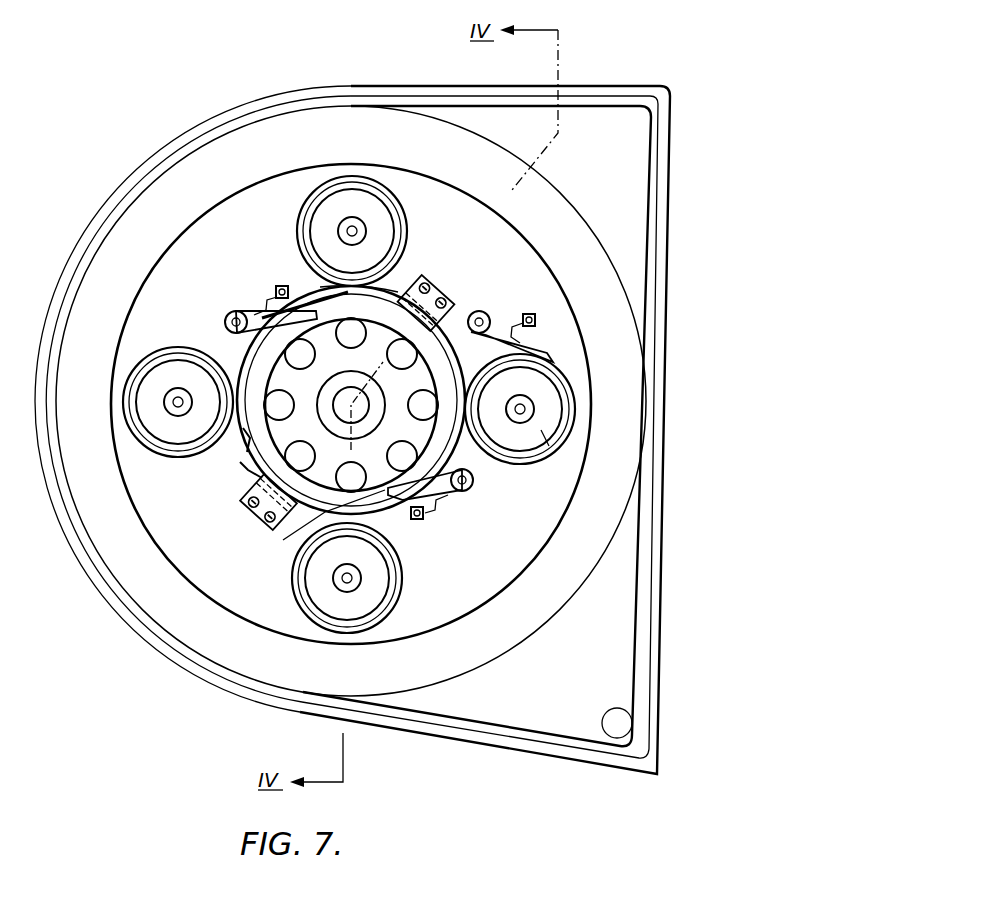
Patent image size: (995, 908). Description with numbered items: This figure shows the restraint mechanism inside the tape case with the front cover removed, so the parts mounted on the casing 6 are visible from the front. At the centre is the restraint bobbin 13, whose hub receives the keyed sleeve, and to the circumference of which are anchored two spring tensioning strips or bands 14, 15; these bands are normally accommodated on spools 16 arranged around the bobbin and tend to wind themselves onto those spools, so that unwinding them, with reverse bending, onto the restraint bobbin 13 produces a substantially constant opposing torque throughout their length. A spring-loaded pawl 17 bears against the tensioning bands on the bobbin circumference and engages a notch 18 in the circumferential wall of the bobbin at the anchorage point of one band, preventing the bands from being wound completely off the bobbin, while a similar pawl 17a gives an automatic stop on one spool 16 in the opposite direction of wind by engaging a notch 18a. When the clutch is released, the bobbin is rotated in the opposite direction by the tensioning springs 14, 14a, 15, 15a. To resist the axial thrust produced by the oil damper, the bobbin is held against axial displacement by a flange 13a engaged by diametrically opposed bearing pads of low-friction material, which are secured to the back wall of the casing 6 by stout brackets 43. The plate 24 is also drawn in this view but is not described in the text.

The casing 6 is at (149, 150).
The mounting plate 24 is at (618, 88).
The spool 16 is at (380, 250).
The spring tensioning band 15 is at (454, 404).
The tensioning spring 15a is at (255, 440).
The spring-loaded pawl 17 is at (255, 320).
The pawl 17a is at (548, 354).
The restraint bobbin 13 is at (470, 468).
The flange 13a is at (475, 312).
The spring tensioning band 14 is at (320, 290).
The tensioning spring 14a is at (283, 540).
The notch 18 is at (264, 338).
The notch 18a is at (543, 433).
The bracket 43 is at (441, 297).